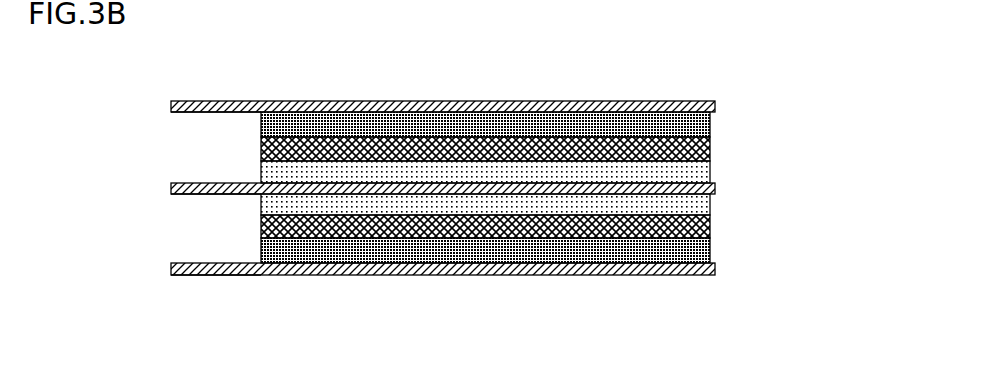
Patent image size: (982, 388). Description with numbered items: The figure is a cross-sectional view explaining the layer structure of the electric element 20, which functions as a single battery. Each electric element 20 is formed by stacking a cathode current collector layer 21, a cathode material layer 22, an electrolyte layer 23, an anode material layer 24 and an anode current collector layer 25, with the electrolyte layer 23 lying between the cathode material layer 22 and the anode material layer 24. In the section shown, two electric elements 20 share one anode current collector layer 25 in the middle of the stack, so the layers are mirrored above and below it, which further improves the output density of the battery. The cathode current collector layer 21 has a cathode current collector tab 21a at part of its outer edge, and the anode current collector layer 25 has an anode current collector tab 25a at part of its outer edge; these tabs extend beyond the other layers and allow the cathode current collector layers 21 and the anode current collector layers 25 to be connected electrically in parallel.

The electric element 20 is at (548, 60).
The cathode current collector layer 21 is at (715, 104).
The cathode current collector tab 21a is at (181, 118).
The cathode material layer 22 is at (710, 127).
The electrolyte layer 23 is at (710, 149).
The anode material layer 24 is at (710, 169).
The anode current collector layer 25 is at (715, 188).
The anode current collector tab 25a is at (182, 199).